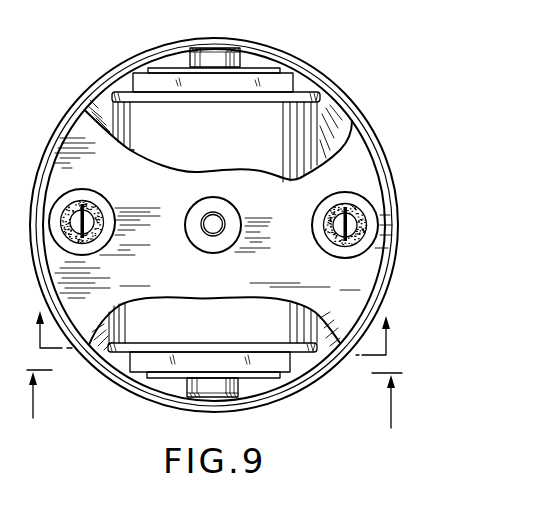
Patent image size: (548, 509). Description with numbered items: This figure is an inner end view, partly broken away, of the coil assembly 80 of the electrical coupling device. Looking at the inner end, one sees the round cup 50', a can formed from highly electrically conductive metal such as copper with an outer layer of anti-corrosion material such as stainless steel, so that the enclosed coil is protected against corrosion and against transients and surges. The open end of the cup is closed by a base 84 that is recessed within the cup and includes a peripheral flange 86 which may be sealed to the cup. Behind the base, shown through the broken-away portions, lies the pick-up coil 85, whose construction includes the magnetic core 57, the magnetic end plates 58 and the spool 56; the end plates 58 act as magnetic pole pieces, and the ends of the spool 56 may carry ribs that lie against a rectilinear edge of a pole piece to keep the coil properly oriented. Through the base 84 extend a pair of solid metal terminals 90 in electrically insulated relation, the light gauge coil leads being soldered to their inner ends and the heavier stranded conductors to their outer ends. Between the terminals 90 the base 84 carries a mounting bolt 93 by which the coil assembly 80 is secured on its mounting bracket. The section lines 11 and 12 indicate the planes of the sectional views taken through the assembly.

The cup 50' is at (214, 223).
The spool 56 is at (108, 352).
The magnetic core 57 is at (237, 55).
The magnetic end plates 58 is at (280, 82).
The coil assembly 80 is at (246, 210).
The base 84 is at (369, 160).
The coil 85 is at (304, 122).
The peripheral flange 86 is at (72, 125).
The terminals 90 is at (84, 212).
The mounting bolt 93 is at (208, 218).
The section line 11- 11 is at (213, 333).
The section line 12- 12 is at (211, 399).